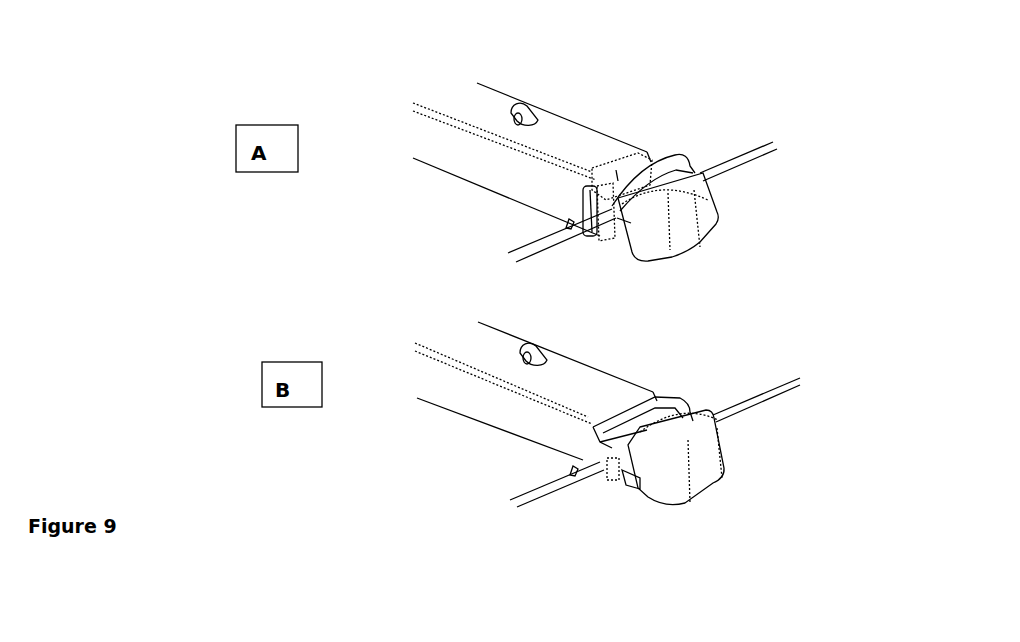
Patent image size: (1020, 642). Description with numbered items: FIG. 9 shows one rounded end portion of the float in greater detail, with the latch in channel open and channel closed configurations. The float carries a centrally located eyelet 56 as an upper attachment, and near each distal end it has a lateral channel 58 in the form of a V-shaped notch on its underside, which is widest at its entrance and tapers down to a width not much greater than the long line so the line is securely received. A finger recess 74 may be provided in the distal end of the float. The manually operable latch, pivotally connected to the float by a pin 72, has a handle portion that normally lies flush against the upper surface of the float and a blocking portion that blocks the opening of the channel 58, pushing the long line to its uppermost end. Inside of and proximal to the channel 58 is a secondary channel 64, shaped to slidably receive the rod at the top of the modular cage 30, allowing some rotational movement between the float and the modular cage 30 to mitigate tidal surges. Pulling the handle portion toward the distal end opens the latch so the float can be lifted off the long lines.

The modular cage 30 is at (529, 167).
The eyelet 56 is at (518, 103).
The lateral channel 58 is at (608, 242).
The secondary channel 64 is at (563, 472).
The pin 72 is at (610, 463).
The finger recess 74 is at (608, 165).